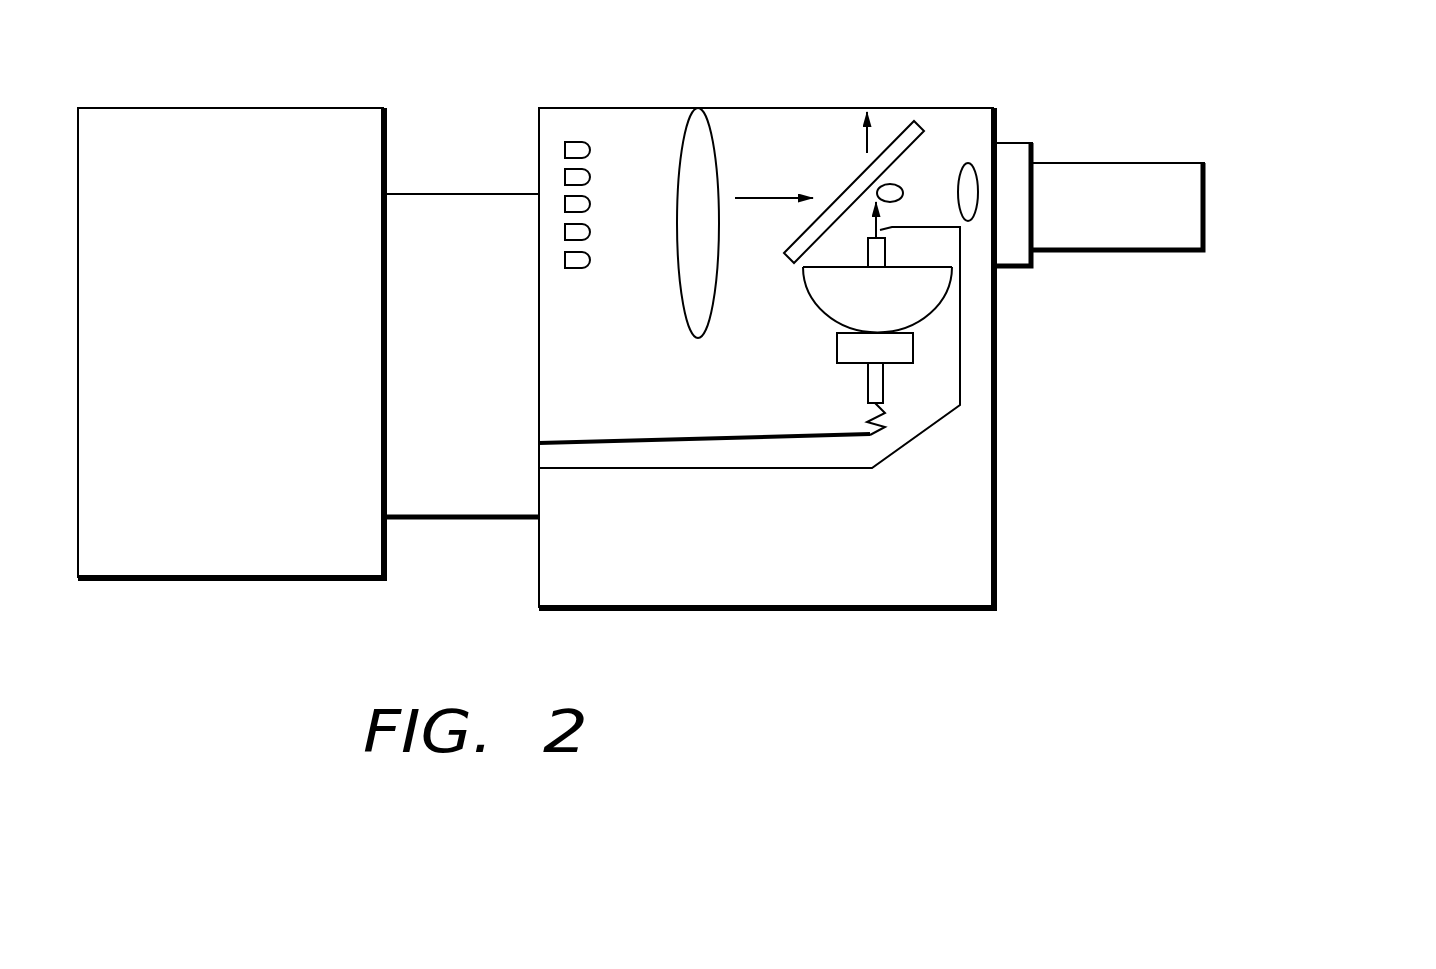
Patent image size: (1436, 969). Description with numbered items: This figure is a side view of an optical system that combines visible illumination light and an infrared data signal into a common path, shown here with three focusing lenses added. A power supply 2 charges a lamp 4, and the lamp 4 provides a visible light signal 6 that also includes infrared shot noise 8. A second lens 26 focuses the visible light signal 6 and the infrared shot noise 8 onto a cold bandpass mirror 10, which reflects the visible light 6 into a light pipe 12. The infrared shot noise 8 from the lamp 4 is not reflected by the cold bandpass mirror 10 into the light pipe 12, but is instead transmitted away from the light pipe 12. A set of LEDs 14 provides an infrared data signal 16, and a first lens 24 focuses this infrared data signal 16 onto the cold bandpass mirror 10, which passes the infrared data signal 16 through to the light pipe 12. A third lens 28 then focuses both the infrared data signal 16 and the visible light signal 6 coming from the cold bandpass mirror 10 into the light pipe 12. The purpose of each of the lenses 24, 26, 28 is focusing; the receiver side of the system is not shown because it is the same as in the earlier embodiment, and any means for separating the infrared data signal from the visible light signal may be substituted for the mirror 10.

The power supply 2 is at (233, 432).
The lamp 4 is at (890, 312).
The visible light signal 6 is at (872, 228).
The infrared shot noise 8 is at (866, 151).
The cold bandpass mirror 10 is at (923, 118).
The light pipe 12 is at (1097, 252).
The set of LEDs 14 is at (553, 177).
The infrared data signal 16 is at (753, 198).
The first lens 24 is at (722, 175).
The second lens 26 is at (901, 185).
The third lens 28 is at (977, 173).